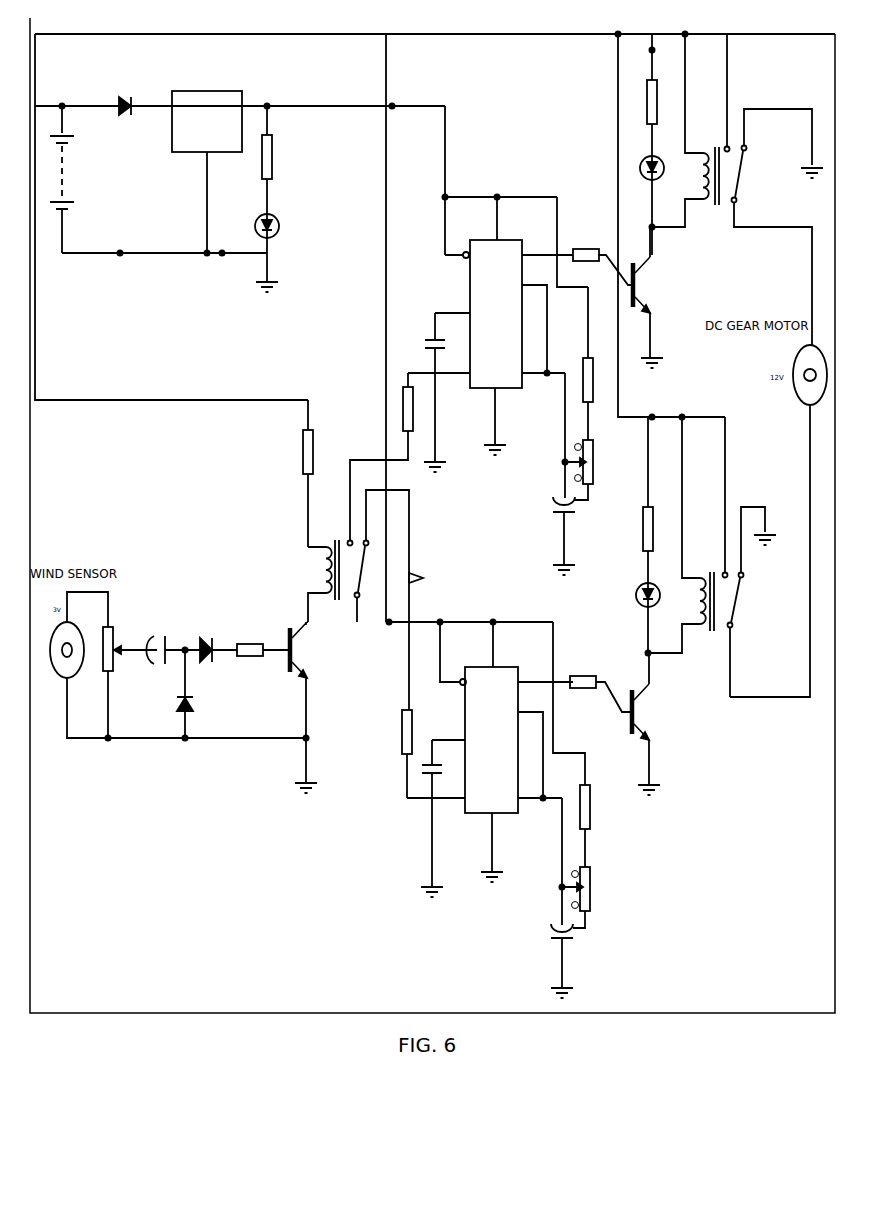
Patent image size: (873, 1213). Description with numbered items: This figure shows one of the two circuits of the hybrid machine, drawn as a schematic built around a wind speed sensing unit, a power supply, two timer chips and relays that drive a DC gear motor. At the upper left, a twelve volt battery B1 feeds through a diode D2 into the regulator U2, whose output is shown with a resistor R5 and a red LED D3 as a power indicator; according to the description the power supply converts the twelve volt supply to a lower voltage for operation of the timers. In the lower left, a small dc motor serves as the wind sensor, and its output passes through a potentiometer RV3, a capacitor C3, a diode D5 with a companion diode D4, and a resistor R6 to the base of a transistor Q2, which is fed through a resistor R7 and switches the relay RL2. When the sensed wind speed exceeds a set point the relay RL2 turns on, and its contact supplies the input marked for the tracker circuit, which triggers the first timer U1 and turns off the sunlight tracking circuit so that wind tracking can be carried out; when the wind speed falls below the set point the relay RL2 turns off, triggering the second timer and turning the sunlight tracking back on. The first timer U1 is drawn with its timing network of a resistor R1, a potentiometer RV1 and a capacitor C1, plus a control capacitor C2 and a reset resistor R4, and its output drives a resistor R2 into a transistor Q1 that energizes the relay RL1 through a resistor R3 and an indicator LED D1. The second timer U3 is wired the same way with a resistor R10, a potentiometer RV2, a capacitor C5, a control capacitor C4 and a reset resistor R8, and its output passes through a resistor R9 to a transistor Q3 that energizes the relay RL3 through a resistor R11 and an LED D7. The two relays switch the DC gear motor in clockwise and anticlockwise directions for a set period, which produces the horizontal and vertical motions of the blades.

The 12V battery B1 is at (72, 187).
The diode 1N4007 D2 is at (122, 103).
The Timer 2 U2 is at (206, 114).
The 1k resistor R5 is at (278, 160).
The red LED D3 is at (284, 251).
The 1k resistor R3 is at (661, 95).
The red LED D1 is at (669, 203).
The 12V relay RL1 is at (737, 189).
The NPN transistor Q1 is at (634, 297).
The 10k resistor R2 is at (560, 256).
The Timer 1 U1 is at (486, 326).
The 100p capacitor C2 is at (444, 392).
The 4.7k resistor R4 is at (390, 456).
The 1k resistor R1 is at (598, 363).
The 500K potentiometer RV1 is at (593, 470).
The 100uF capacitor C1 is at (576, 474).
The 1k resistor R7 is at (317, 473).
The relay RL2 is at (440, 600).
The NPN transistor Q2 is at (295, 707).
The 10K potentiometer RV3 is at (130, 663).
The 1nF capacitor C3 is at (173, 647).
The diode 1N4148 D5 is at (217, 646).
The diode 1N4148 D4 is at (198, 694).
The 10k resistor R6 is at (250, 650).
The 555 timer U3 is at (490, 752).
The 4.7k resistor R8 is at (416, 754).
The 100p capacitor C4 is at (442, 818).
The 10k resistor R9 is at (600, 688).
The NPN transistor Q3 is at (650, 724).
The 1k resistor R10 is at (587, 744).
The 500K potentiometer RV2 is at (591, 897).
The 100uF capacitor C5 is at (575, 898).
The 1k resistor R11 is at (662, 500).
The red LED D7 is at (665, 617).
The 12V relay RL3 is at (712, 557).